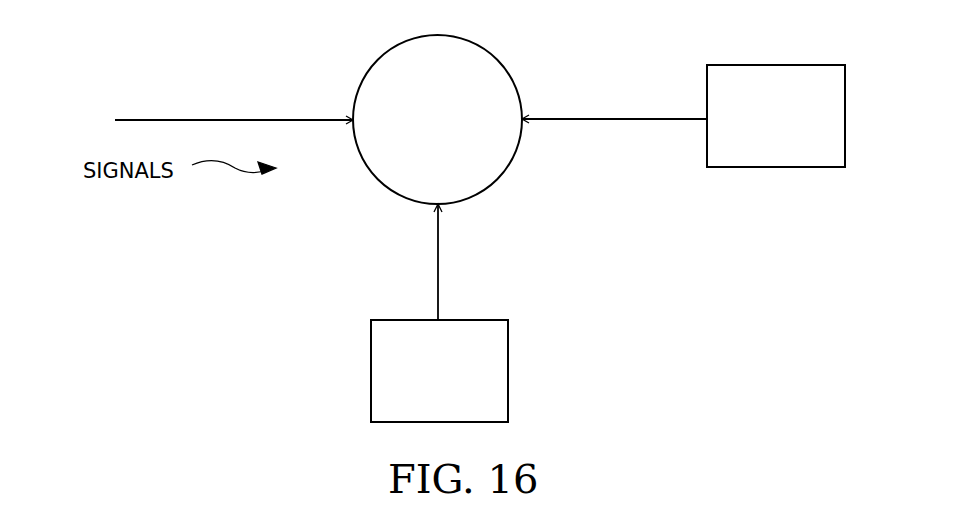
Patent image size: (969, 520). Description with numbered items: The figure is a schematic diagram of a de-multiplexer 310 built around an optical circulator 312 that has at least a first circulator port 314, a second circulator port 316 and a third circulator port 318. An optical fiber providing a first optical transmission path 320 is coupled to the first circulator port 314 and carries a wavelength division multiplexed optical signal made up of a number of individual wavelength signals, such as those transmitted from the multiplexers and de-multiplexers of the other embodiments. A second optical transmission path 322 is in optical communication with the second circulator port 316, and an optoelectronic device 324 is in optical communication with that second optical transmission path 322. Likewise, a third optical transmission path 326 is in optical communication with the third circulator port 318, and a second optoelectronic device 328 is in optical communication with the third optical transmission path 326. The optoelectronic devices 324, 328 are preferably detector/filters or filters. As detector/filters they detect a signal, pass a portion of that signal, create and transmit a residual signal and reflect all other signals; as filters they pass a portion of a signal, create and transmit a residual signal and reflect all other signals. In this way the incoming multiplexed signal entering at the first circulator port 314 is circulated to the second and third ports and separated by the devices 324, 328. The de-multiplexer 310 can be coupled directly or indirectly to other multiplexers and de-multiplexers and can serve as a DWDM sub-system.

The de-multiplexer 310 is at (292, 290).
The optical circulator 312 is at (487, 50).
The first circulator port 314 is at (352, 120).
The second circulator port 316 is at (437, 207).
The third circulator port 318 is at (522, 120).
The first optical transmission path 320 is at (242, 120).
The second optical transmission path 322 is at (438, 257).
The optoelectronic device 324 is at (508, 350).
The third optical transmission path 326 is at (608, 119).
The second optoelectronic device 328 is at (762, 157).